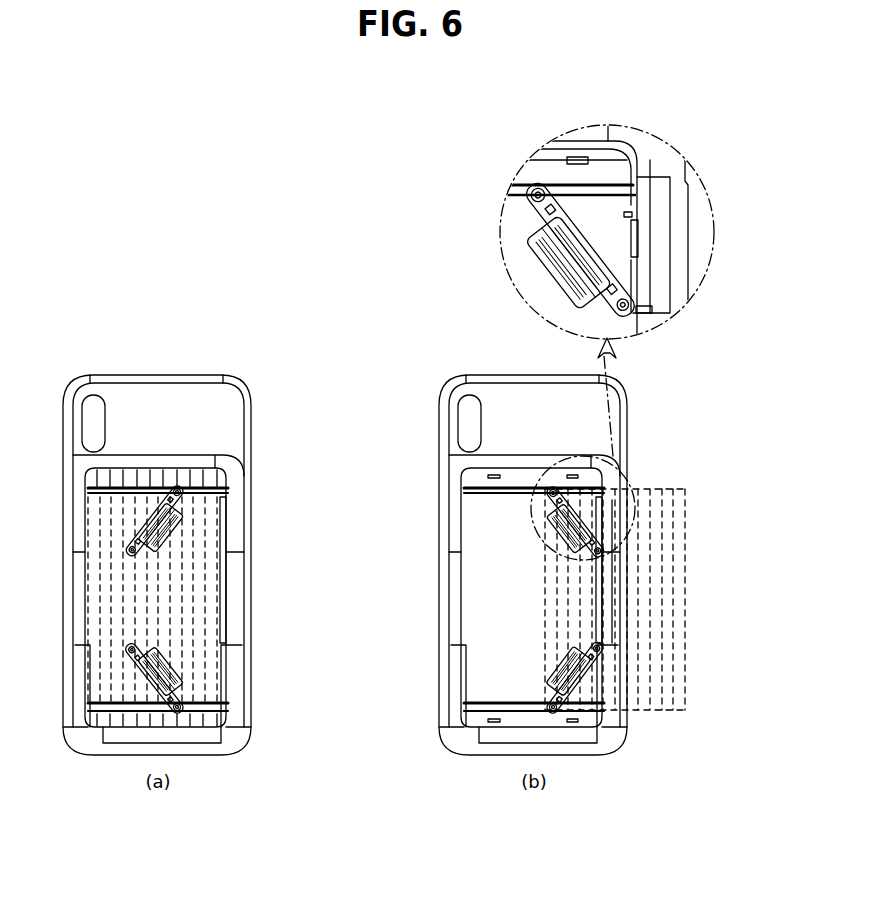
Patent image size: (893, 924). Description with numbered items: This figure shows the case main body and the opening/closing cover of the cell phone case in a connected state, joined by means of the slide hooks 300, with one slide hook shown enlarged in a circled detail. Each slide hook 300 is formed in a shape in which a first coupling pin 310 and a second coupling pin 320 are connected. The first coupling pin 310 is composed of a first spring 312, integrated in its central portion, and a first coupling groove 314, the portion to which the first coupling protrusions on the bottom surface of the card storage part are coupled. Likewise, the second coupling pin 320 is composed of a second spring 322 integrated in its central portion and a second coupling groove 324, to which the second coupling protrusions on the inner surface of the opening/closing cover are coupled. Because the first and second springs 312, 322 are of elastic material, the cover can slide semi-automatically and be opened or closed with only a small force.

The slide hooks 300 is at (656, 128).
The first coupling pin 310 is at (627, 267).
The first spring 312 is at (603, 228).
The first coupling groove 314 is at (532, 196).
The second coupling pin 320 is at (533, 238).
The second spring 322 is at (557, 260).
The second coupling groove 324 is at (628, 310).